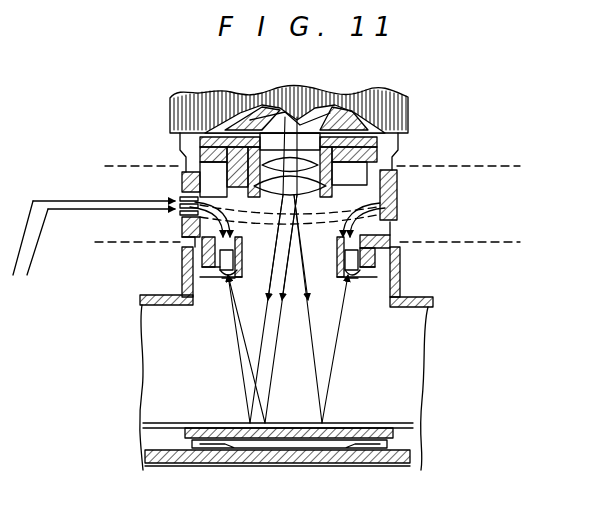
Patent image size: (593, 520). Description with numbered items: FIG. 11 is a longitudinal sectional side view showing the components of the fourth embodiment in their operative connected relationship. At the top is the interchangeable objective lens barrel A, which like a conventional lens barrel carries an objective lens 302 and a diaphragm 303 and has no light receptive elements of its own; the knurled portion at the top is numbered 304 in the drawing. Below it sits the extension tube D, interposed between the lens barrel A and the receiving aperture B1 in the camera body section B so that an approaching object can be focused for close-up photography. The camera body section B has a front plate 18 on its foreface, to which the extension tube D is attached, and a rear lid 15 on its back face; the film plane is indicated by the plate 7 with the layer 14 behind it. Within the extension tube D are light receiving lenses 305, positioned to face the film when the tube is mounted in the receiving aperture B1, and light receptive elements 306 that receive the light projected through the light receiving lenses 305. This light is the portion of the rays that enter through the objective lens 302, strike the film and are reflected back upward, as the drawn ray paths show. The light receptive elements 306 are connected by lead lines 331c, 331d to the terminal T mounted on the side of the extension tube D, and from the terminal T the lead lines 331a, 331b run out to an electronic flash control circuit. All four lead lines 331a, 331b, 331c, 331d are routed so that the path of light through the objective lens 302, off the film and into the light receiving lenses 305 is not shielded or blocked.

The objective lens 302 is at (332, 125).
The diaphragm 303 is at (185, 120).
The knurled adjustment knob 304 is at (281, 130).
The light receiving lenses 305 is at (226, 280).
The light receptive elements 306 is at (272, 241).
The lead line 331a is at (104, 200).
The lead line 331b is at (70, 210).
The lead line 331c is at (187, 228).
The lead line 331d is at (187, 240).
The front plate 18 is at (180, 282).
The plate 7 is at (177, 423).
The sensor substrate 14 is at (370, 433).
The rear lid 15 is at (227, 457).
The terminal T is at (187, 193).
The interchangeable objective lens barrel A is at (448, 127).
The extension tube D is at (413, 185).
The camera body section B is at (473, 325).
The receiving aperture B1 is at (395, 273).